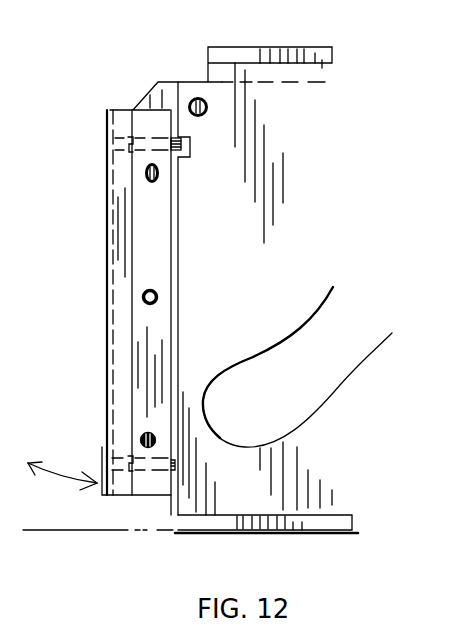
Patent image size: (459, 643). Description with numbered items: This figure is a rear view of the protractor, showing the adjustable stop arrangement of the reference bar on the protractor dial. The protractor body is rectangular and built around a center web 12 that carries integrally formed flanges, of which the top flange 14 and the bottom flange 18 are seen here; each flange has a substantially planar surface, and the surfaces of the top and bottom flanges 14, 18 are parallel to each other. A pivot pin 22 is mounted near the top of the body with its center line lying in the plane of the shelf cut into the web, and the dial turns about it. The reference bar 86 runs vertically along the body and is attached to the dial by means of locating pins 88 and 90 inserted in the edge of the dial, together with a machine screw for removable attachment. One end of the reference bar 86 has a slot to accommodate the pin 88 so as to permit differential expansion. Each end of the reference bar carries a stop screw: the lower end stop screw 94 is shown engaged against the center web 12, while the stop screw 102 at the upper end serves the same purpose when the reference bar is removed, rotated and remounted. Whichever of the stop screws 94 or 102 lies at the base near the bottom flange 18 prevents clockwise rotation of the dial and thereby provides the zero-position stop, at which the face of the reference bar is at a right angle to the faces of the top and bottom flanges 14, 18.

The center web 12 is at (232, 507).
The top flange 14 is at (307, 47).
The bottom flange 18 is at (340, 527).
The pivot pin 22 is at (200, 98).
The reference bar 86 is at (102, 315).
The locating pin 88 is at (143, 170).
The locating pin 90 is at (147, 435).
The stop screw 94 is at (172, 463).
The stop screw 102 is at (185, 147).